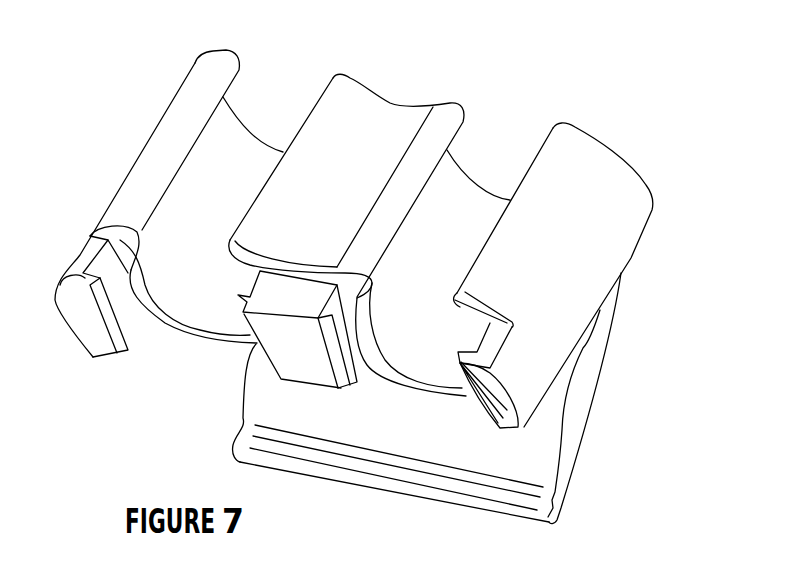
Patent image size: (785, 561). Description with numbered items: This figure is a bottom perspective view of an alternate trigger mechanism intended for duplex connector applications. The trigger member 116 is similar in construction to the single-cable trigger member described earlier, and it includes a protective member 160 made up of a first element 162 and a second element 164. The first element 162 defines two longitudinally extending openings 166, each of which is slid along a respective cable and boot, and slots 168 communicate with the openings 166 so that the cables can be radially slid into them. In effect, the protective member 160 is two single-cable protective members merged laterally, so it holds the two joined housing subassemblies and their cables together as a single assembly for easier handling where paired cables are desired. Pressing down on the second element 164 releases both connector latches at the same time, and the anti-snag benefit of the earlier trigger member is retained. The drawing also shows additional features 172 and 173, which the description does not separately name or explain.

The trigger member 116 is at (701, 146).
The protective member 160 is at (598, 281).
The first element 162 is at (385, 110).
The second element 164 is at (580, 393).
The longitudinally extending openings 166 is at (211, 255).
The slots 168 is at (292, 72).
The tabs 172 is at (85, 291).
The protrusions 173 is at (104, 336).